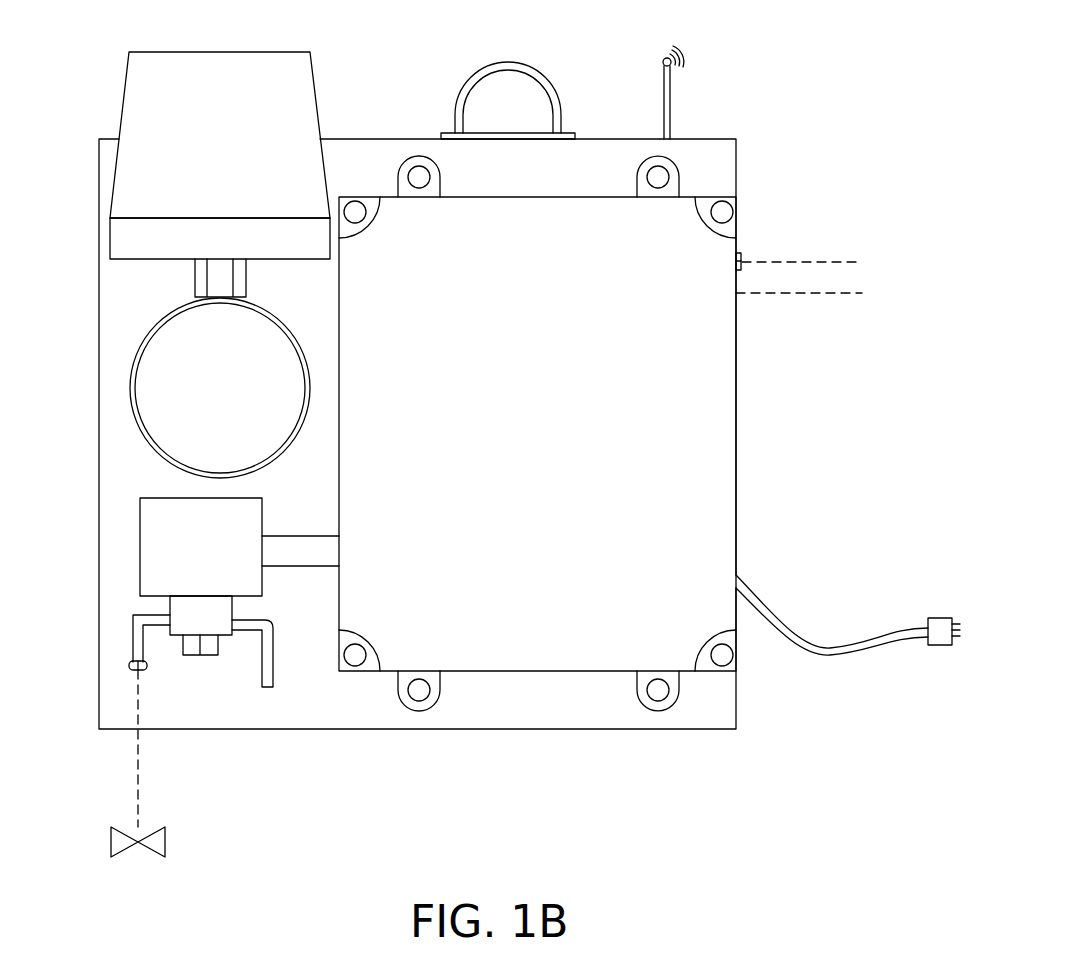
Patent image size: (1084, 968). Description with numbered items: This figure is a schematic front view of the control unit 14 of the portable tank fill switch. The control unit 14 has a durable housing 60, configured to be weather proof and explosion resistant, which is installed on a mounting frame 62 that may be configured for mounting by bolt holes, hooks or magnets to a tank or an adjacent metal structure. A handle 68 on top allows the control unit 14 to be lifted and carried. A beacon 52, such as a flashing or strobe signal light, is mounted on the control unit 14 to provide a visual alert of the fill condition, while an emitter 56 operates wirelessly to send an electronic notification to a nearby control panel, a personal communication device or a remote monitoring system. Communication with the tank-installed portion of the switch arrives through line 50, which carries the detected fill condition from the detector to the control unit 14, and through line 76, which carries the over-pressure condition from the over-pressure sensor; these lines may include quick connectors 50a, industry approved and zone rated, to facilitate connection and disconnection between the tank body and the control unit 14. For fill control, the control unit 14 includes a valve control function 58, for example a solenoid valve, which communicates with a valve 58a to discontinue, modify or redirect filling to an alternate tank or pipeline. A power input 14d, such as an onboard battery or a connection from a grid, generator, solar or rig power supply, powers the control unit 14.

The control unit 14 is at (714, 501).
The power input 14d is at (858, 650).
The line 50 is at (793, 262).
The quick connector 50a is at (741, 253).
The beacon 52 is at (126, 78).
The emitter 56 is at (661, 84).
The valve control function 58 is at (140, 547).
The valve 58a is at (165, 840).
The housing 60 is at (643, 440).
The mounting frame 62 is at (580, 730).
The handle 68 is at (472, 77).
The line 76 is at (830, 293).